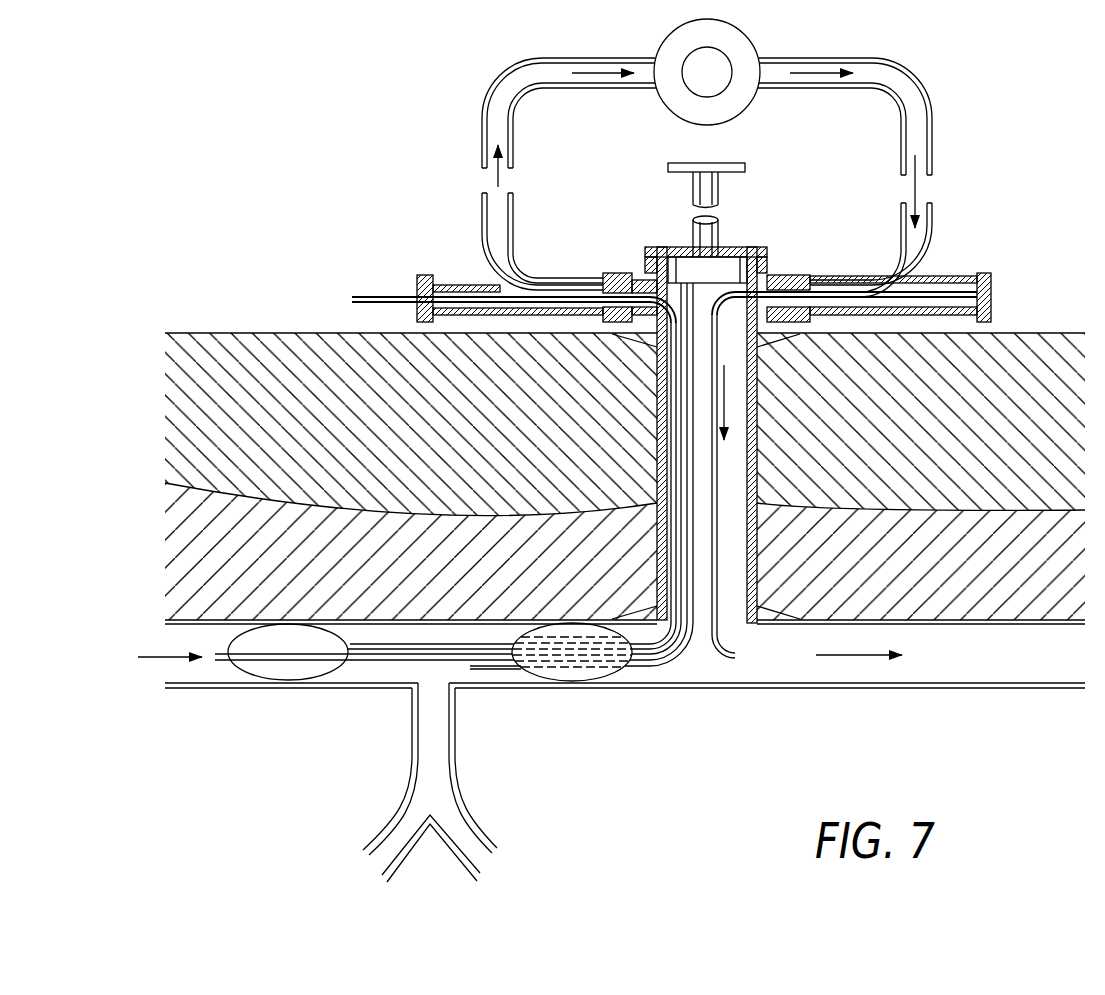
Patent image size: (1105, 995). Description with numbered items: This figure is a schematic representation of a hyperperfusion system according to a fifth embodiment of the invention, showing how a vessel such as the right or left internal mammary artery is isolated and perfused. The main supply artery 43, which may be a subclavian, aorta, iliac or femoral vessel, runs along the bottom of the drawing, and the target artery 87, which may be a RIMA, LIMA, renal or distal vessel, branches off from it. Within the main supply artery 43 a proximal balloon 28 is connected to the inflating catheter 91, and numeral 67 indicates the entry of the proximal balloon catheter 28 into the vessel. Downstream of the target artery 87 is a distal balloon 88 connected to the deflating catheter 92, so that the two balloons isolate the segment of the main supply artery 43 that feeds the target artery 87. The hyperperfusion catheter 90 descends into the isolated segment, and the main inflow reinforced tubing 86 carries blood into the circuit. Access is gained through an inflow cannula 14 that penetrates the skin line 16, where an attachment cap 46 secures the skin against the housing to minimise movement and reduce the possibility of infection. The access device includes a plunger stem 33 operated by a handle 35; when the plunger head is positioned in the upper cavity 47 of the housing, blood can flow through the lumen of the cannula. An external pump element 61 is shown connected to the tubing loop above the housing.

The inflow cannula 14 is at (650, 407).
The skin line 16 is at (265, 333).
The proximal balloon 28 is at (283, 670).
The plunger stem 33 is at (718, 227).
The handle 35 is at (745, 165).
The main supply artery 43 is at (193, 687).
The attachment cap 46 is at (988, 290).
The upper cavity 47 is at (765, 277).
The pump 61 is at (743, 50).
The entry of the proximal balloon catheter 67 is at (148, 653).
The main inflow reinforced tubing 86 is at (223, 660).
The target artery 87 is at (460, 832).
The distal balloon 88 is at (567, 676).
The hyperperfusion catheter 90 is at (699, 653).
The inflating catheter 91 is at (393, 648).
The deflating catheter 92 is at (657, 647).